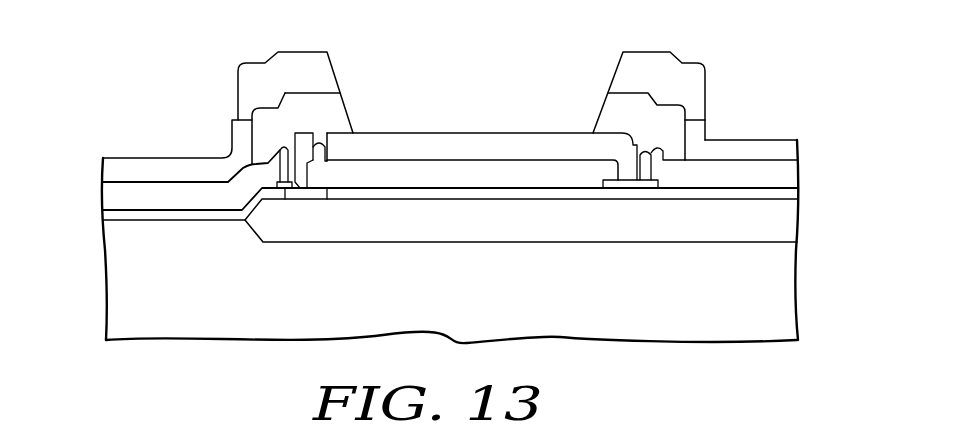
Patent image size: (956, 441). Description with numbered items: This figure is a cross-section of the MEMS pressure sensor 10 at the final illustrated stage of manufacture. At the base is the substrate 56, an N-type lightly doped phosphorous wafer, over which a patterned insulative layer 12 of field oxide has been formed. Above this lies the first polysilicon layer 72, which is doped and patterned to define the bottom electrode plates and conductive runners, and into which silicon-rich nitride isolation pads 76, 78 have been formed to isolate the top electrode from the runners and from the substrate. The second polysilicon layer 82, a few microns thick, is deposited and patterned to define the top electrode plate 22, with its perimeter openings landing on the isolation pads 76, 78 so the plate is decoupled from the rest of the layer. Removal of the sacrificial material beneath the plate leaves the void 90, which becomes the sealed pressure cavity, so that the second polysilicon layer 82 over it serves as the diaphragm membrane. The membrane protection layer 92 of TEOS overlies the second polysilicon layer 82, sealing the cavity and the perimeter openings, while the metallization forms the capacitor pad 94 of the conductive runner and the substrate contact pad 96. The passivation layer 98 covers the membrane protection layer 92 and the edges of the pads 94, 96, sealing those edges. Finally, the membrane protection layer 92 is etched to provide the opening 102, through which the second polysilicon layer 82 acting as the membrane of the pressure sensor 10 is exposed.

The pressure sensor 10 is at (778, 31).
The opening 102 is at (543, 47).
The top electrode plate 22 is at (526, 130).
The passivation layer 98 is at (304, 86).
The membrane protection layer 92 is at (329, 128).
The second polysilicon layer 82 is at (110, 195).
The substrate contact pad 96 is at (178, 170).
The capacitor pad 94 is at (745, 140).
The void 90 is at (475, 167).
The isolation pad 76 is at (295, 191).
The isolation pad 78 is at (645, 183).
The patterned insulative layer 12 is at (604, 234).
The substrate 56 is at (604, 310).
The first polysilicon layer 72 is at (161, 213).